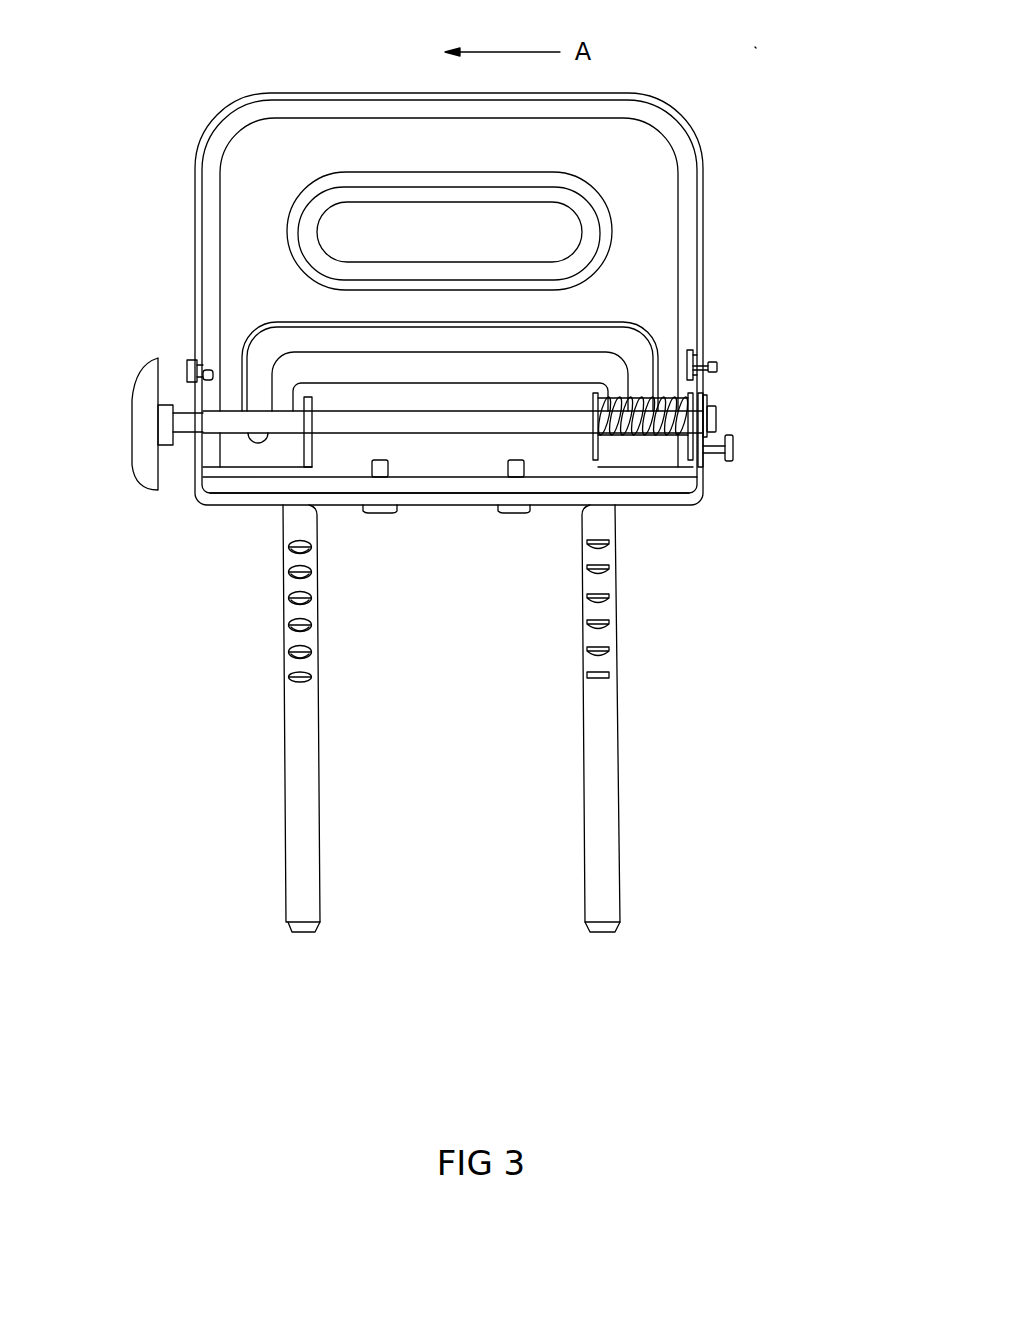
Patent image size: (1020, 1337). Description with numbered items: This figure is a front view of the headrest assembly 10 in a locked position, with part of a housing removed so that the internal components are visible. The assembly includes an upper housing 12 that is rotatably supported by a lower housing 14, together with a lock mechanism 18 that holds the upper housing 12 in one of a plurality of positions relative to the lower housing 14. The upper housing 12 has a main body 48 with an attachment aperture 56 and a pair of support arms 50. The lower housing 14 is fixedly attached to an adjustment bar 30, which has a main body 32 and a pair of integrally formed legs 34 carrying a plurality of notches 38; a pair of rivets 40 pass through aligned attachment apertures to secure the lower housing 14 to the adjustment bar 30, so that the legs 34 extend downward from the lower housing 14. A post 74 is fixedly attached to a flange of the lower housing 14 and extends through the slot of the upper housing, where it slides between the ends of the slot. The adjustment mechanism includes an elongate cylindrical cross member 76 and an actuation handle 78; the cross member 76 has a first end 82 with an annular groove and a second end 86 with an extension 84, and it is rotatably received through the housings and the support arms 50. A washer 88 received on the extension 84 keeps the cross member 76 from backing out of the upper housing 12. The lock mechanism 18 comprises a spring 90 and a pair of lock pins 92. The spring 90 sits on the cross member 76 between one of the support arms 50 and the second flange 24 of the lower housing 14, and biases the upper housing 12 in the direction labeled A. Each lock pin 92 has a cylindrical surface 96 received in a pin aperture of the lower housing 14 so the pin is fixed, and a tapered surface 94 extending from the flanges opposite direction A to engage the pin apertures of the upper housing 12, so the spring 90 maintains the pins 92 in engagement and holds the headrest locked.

The headrest assembly 10 is at (755, 47).
The upper housing 12 is at (700, 137).
The lower housing 14 is at (225, 515).
The lock mechanism 18 is at (733, 405).
The second flange 24 is at (703, 383).
The adjustment bar 30 is at (620, 770).
The main body 32 is at (447, 490).
The legs 34 is at (300, 799).
The notches 38 is at (297, 625).
The rivets 40 is at (380, 513).
The main body 48 is at (655, 238).
The support arms 50 is at (310, 457).
The attachment aperture 56 is at (362, 215).
The post 74 is at (734, 452).
The cross member 76 is at (571, 445).
The actuation handle 78 is at (130, 413).
The first end 82 is at (182, 432).
The extension 84 is at (716, 417).
The second end 86 is at (700, 467).
The washer 88 is at (705, 397).
The spring 90 is at (692, 440).
The lock pins 92 is at (220, 363).
The tapered surface 94 is at (210, 370).
The cylindrical surface 96 is at (187, 362).